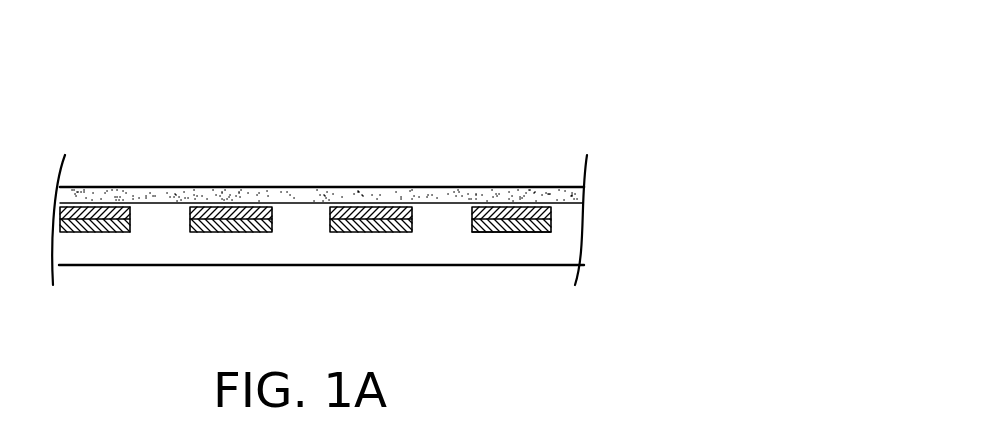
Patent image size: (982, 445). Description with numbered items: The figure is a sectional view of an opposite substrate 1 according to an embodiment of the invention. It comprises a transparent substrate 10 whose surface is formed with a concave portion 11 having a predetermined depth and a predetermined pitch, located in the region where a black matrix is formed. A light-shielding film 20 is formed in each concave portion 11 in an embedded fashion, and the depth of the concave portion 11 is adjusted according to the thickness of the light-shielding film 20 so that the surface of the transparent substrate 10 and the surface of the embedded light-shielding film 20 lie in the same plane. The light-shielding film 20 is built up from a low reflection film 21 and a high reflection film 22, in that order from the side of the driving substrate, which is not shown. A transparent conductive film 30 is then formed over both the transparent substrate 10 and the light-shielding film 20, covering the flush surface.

The opposite substrate 1 is at (415, 104).
The transparent substrate 10 is at (568, 252).
The concave portion 11 is at (523, 232).
The light-shielding film 20 is at (551, 214).
The low reflection film 21 is at (467, 208).
The high reflection film 22 is at (470, 228).
The transparent conductive film 30 is at (447, 193).